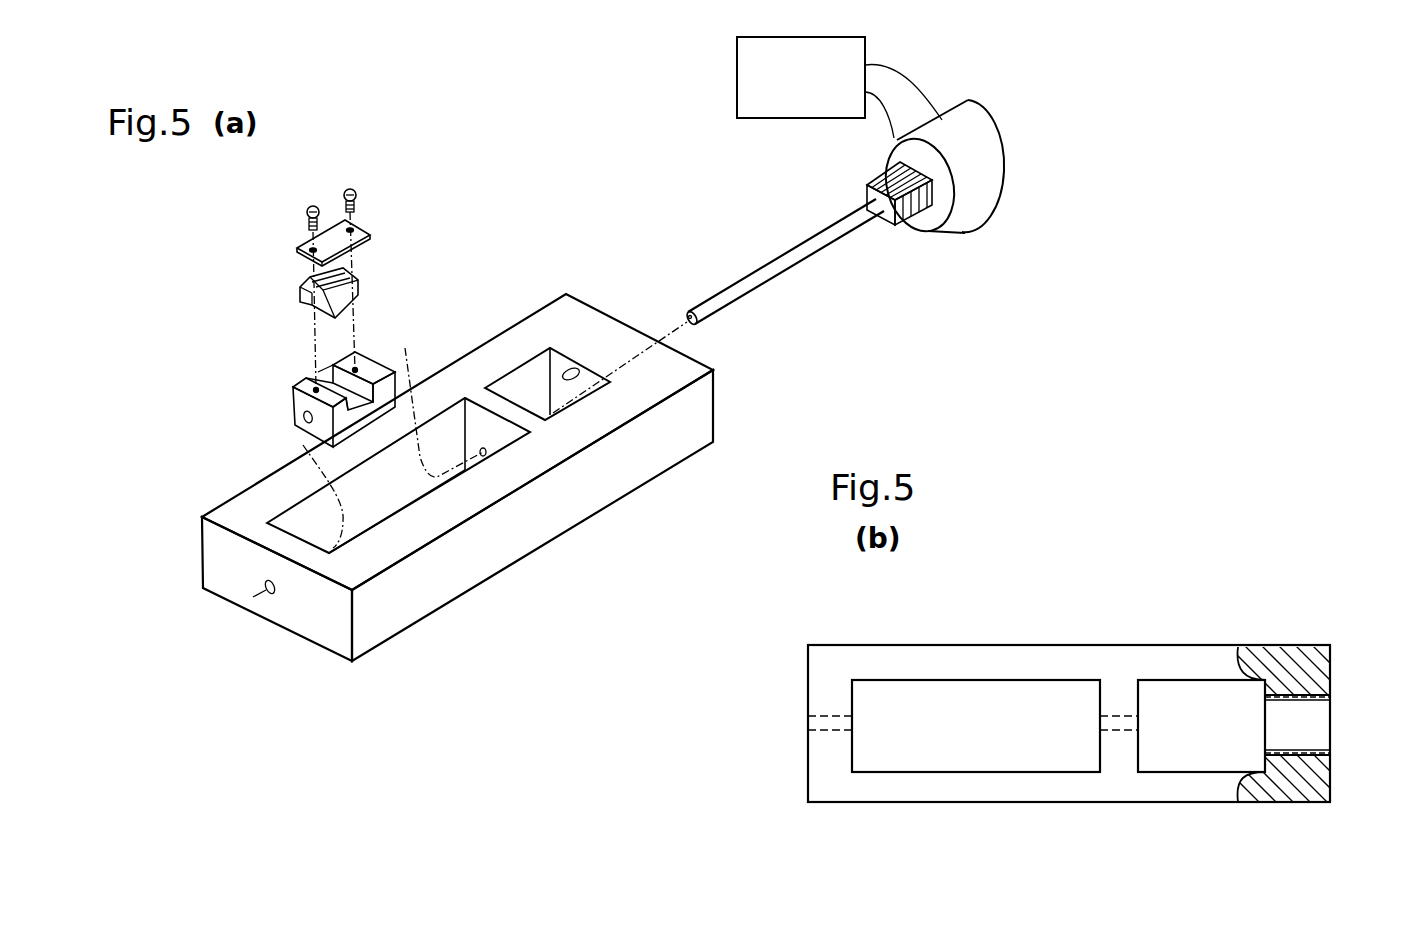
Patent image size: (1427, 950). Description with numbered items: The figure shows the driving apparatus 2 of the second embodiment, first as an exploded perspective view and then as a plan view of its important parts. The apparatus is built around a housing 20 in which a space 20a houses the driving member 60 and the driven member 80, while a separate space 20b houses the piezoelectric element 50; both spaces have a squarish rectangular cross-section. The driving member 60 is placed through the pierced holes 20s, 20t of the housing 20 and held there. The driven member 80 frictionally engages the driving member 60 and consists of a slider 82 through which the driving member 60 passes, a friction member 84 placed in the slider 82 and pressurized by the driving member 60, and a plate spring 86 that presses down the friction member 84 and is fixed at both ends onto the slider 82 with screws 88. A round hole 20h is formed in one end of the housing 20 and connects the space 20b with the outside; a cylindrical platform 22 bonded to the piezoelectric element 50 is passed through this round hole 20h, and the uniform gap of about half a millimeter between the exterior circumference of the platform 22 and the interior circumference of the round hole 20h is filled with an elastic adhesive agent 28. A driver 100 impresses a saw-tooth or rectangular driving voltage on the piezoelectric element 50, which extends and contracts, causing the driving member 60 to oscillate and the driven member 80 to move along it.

In FIG. 5A, the driving apparatus 2 is at (613, 138).
In FIG. 5A, the driver 100 is at (737, 55).
In FIG. 5A, the housing 20 is at (581, 529).
In FIG. 5B, the housing 20 is at (1082, 668).
In FIG. 5A, the space 20a is at (300, 527).
In FIG. 5B, the space 20a is at (955, 708).
In FIG. 5A, the space 20b is at (520, 383).
In FIG. 5B, the space 20b is at (1193, 707).
In FIG. 5A, the round hole 20h is at (587, 377).
In FIG. 5B, the round hole 20h is at (1290, 757).
In FIG. 5A, the pierced hole 20t is at (487, 456).
In FIG. 5B, the pierced hole 20t is at (1118, 728).
In FIG. 5A, the pierced hole 20s is at (270, 597).
In FIG. 5B, the pierced hole 20s is at (789, 741).
In FIG. 5A, the cylindrical platform 22 is at (970, 187).
In FIG. 5B, the cylindrical platform 22 is at (1313, 718).
In FIG. 5B, the elastic adhesive agent 28 is at (1325, 668).
In FIG. 5A, the piezoelectric element 50 is at (895, 220).
In FIG. 5A, the driving member 60 is at (767, 278).
In FIG. 5A, the driven member 80 is at (451, 138).
In FIG. 5A, the slider 82 is at (372, 367).
In FIG. 5A, the friction member 84 is at (362, 297).
In FIG. 5A, the plate spring 86 is at (362, 230).
In FIG. 5A, the screws 88 is at (352, 188).